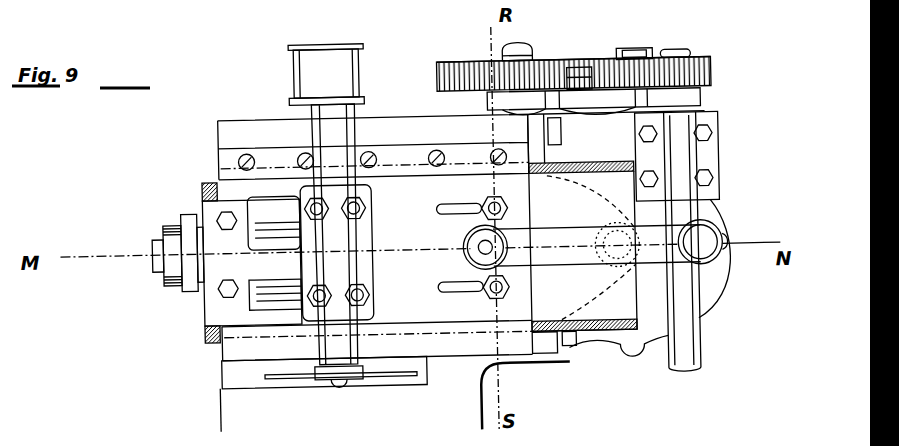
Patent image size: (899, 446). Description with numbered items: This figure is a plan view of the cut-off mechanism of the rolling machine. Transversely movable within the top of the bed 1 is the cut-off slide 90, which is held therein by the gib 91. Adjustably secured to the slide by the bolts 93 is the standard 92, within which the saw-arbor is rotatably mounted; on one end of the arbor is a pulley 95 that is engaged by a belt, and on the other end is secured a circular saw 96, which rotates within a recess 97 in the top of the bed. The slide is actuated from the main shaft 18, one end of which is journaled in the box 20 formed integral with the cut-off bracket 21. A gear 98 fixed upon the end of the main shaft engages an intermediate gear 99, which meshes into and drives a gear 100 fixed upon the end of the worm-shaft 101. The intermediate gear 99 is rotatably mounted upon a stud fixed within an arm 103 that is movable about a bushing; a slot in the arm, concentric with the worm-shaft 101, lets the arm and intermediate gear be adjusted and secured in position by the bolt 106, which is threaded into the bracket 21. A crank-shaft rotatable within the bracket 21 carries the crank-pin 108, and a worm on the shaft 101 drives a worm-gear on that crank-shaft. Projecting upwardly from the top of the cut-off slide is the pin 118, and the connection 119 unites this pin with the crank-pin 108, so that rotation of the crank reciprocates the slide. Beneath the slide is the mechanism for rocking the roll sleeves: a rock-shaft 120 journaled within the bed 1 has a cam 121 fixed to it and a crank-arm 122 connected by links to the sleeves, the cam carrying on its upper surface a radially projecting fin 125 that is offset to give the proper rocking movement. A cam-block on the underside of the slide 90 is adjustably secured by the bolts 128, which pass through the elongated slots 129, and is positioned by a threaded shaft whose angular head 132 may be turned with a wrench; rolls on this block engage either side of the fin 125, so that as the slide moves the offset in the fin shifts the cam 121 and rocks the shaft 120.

The bed 1 is at (400, 126).
The main shaft 18 is at (699, 353).
The box 20 is at (720, 163).
The cut-off bracket 21 is at (716, 290).
The cut-off slide 90 is at (597, 318).
The gib 91 is at (228, 158).
The standard 92 is at (314, 116).
The bolts 93 is at (370, 298).
The pulley 95 is at (297, 64).
The circular saw 96 is at (290, 380).
The recess 97 is at (235, 380).
The gear 98 is at (716, 84).
The intermediate gear 99 is at (626, 66).
The gear 100 is at (460, 72).
The worm-shaft 101 is at (518, 44).
The arm 103 is at (556, 96).
The bolt 106 is at (581, 64).
The crank-pin 108 is at (707, 246).
The pin 118 is at (491, 246).
The connection 119 is at (569, 263).
The rock-shaft 120 is at (152, 244).
The cam 121 is at (265, 281).
The crank-arm 122 is at (166, 279).
The fin 125 is at (263, 238).
The bolts 128 is at (506, 291).
The elongated slots 129 is at (458, 293).
The head 132 is at (253, 244).